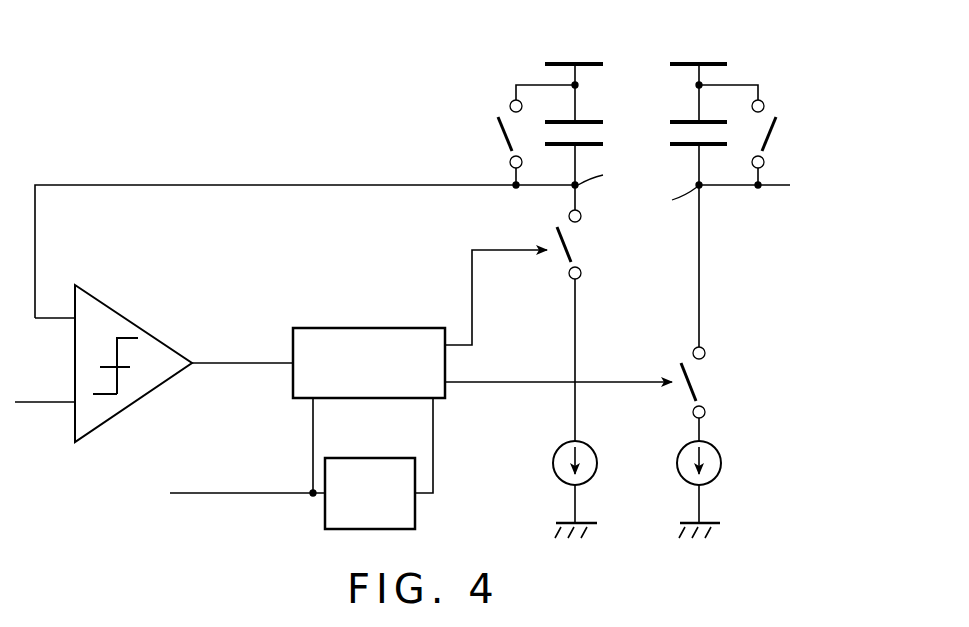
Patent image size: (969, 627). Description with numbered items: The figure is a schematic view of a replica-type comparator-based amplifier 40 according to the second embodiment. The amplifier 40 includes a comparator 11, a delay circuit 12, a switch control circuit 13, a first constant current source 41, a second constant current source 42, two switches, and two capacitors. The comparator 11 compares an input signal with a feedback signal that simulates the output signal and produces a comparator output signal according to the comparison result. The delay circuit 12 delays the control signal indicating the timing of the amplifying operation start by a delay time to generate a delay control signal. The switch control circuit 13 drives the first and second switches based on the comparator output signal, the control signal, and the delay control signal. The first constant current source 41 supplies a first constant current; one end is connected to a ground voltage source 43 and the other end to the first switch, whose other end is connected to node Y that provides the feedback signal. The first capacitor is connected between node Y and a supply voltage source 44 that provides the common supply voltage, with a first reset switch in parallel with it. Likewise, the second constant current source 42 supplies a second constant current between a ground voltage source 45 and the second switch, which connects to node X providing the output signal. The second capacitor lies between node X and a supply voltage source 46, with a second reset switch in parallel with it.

The amplifier 40 is at (170, 86).
The comparator 11 is at (150, 333).
The delay circuit 12 is at (392, 458).
The switch control circuit 13 is at (392, 328).
The constant current source 41 is at (560, 447).
The constant current source 42 is at (684, 447).
The voltage source 43 is at (590, 523).
The voltage source 44 is at (598, 63).
The voltage source 45 is at (715, 523).
The voltage source 46 is at (720, 63).